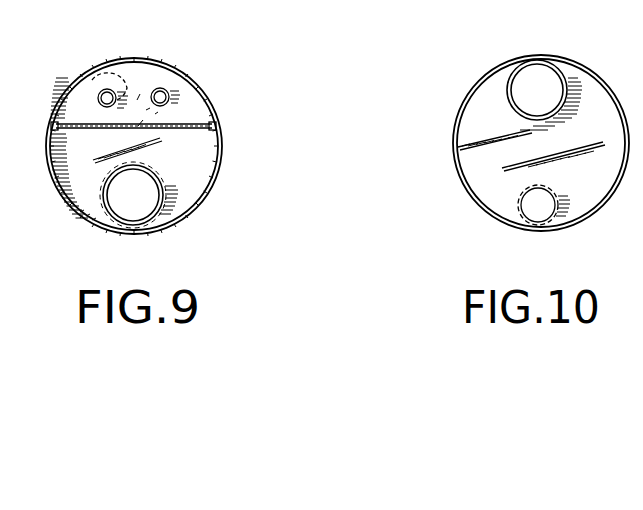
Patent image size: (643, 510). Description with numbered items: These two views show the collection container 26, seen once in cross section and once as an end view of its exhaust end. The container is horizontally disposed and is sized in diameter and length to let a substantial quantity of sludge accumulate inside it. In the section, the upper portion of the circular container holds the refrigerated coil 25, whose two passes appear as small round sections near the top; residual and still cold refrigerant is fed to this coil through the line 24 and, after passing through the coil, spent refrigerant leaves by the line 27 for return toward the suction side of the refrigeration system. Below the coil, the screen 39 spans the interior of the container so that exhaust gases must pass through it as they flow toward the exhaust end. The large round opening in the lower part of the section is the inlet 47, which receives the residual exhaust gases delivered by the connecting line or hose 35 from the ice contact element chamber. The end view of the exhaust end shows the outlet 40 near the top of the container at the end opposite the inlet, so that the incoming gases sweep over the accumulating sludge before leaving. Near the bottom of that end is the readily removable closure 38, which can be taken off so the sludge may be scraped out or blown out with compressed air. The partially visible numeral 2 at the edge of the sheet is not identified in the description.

In FIG. 9, the line 24 is at (108, 140).
In FIG. 9, the refrigerated coil 25 is at (140, 92).
In FIG. 9, the collection container 26 is at (222, 173).
In FIG. 9, the line 27 is at (127, 62).
In FIG. 9, the connecting line or hose 35 is at (82, 219).
In FIG. 9, the screen 39 is at (178, 126).
In FIG. 9, the inlet 47 is at (143, 186).
In FIG. 10, the readily removable closure 38 is at (522, 206).
In FIG. 10, the outlet 40 is at (522, 85).
In FIG. 10, the housing 2 is at (614, 94).